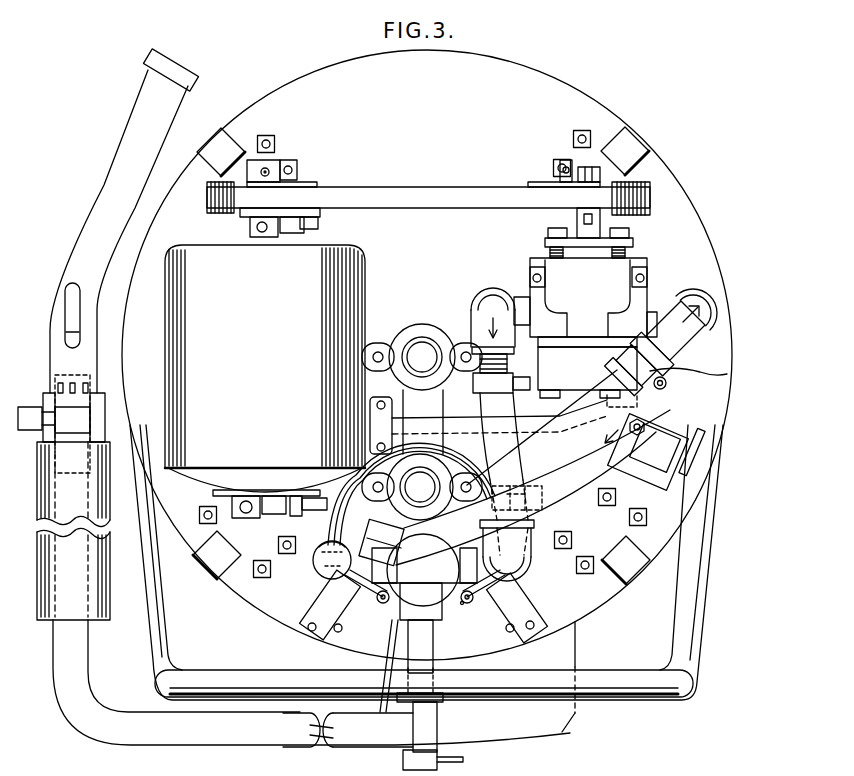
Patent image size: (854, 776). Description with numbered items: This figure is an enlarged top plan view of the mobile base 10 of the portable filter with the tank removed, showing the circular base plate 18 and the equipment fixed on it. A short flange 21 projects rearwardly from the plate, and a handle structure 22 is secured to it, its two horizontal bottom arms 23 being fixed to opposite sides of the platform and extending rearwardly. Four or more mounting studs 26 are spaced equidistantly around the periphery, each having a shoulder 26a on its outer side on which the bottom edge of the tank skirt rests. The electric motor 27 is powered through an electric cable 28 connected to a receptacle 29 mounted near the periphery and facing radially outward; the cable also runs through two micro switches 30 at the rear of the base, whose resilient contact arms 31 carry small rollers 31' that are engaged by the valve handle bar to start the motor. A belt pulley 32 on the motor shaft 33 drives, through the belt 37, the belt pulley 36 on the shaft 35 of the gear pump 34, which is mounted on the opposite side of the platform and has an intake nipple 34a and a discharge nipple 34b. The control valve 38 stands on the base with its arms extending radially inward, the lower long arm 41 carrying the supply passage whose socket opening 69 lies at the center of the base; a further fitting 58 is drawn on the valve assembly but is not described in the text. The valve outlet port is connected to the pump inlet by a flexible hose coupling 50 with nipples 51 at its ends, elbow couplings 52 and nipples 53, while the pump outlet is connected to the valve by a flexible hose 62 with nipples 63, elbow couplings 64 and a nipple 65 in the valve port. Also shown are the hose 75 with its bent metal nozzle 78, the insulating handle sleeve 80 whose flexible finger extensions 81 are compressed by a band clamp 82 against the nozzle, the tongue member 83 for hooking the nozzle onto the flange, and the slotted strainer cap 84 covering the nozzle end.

The mobile base 10 is at (309, 68).
The base plate 18 is at (532, 90).
The flange 21 is at (562, 732).
The handle structure 22 is at (699, 642).
The bottom arms 23 is at (156, 645).
The mounting studs 26 is at (229, 140).
The shoulders 26a is at (722, 161).
The electric motor 27 is at (265, 368).
The electric cable 28 is at (645, 425).
The receptacle 29 is at (673, 467).
The micro switches 30 is at (578, 622).
The resilient contact arms 31 is at (423, 611).
The rollers 31' is at (476, 625).
The belt pulley 32 is at (311, 182).
The shaft 33 is at (270, 168).
The gear pump 34 is at (612, 289).
The intake nipple 34a is at (678, 292).
The discharge nipple 34b is at (523, 300).
The pump shaft 35 is at (583, 165).
The belt pulley 36 is at (540, 178).
The belt 37 is at (425, 193).
The control valve 38 is at (434, 570).
The lower long arm 41 is at (403, 388).
The flexible hose coupling 50 is at (727, 375).
The nipples 51 is at (717, 357).
The elbow couplings 52 is at (707, 310).
The nipples 53 is at (713, 297).
The lower flange fitting 58 is at (405, 497).
The flexible hose 62 is at (497, 409).
The nipples 63 is at (507, 362).
The elbow couplings 64 is at (483, 305).
The nipple 65 is at (474, 599).
The socket opening 69 is at (412, 335).
The hose 75 is at (98, 727).
The nozzle 78 is at (90, 202).
The handle sleeve 80 is at (70, 607).
The finger extensions 81 is at (72, 395).
The band clamp 82 is at (84, 422).
The tongue member 83 is at (68, 320).
The slotted strainer cap 84 is at (186, 78).